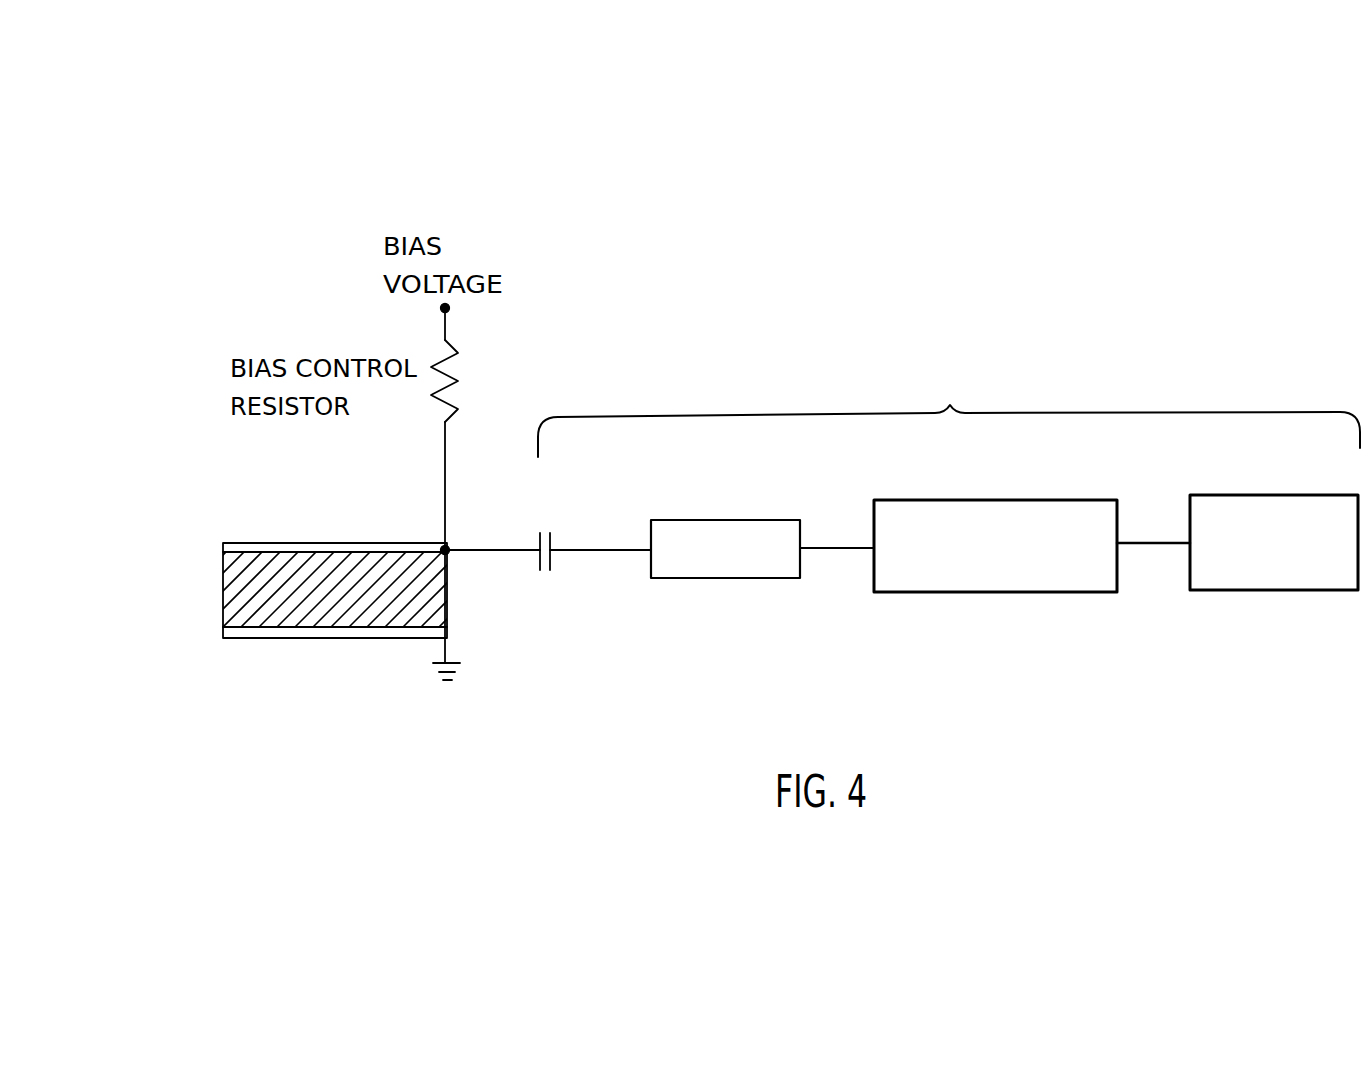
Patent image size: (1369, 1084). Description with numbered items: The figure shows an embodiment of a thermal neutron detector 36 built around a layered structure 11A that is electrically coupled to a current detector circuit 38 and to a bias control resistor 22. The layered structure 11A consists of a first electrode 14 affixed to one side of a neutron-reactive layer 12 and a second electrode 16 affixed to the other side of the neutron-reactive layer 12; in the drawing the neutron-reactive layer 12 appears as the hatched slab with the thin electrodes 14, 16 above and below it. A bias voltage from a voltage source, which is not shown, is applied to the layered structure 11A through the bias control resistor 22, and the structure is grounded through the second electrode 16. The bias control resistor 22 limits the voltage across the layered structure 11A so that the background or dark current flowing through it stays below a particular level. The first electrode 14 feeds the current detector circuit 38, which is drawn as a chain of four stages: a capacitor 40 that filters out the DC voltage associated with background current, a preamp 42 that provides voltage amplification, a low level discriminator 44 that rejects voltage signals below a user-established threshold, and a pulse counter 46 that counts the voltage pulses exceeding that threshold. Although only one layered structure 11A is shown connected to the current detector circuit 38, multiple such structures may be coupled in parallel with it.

The layered structure 11A is at (283, 592).
The neutron-reactive layer 12 is at (223, 595).
The first electrode 14 is at (289, 554).
The second electrode 16 is at (289, 638).
The bias control resistor 22 is at (456, 370).
The thermal neutron detector 36 is at (810, 233).
The current detector circuit 38 is at (949, 416).
The capacitor 40 is at (552, 540).
The preamp 42 is at (724, 520).
The low level discriminator 44 is at (997, 498).
The pulse counter 46 is at (1276, 495).